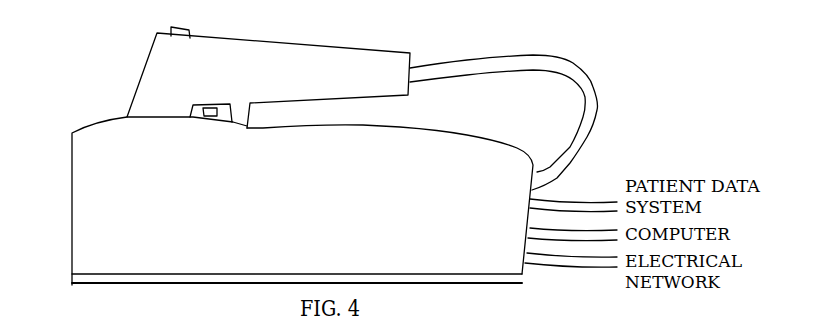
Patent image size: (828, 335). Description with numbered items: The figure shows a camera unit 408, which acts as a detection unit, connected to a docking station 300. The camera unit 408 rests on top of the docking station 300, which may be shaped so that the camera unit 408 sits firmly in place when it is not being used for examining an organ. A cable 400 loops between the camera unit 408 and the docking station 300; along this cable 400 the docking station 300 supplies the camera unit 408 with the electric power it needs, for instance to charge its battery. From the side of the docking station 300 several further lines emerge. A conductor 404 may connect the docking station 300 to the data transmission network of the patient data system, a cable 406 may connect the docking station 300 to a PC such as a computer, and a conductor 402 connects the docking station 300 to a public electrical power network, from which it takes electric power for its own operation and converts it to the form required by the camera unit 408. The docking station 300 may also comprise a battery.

The docking station 300 is at (70, 175).
The camera unit 408 is at (292, 43).
The cable 400 is at (581, 70).
The conductor 404 is at (558, 202).
The cable 406 is at (545, 240).
The conductor 402 is at (567, 267).